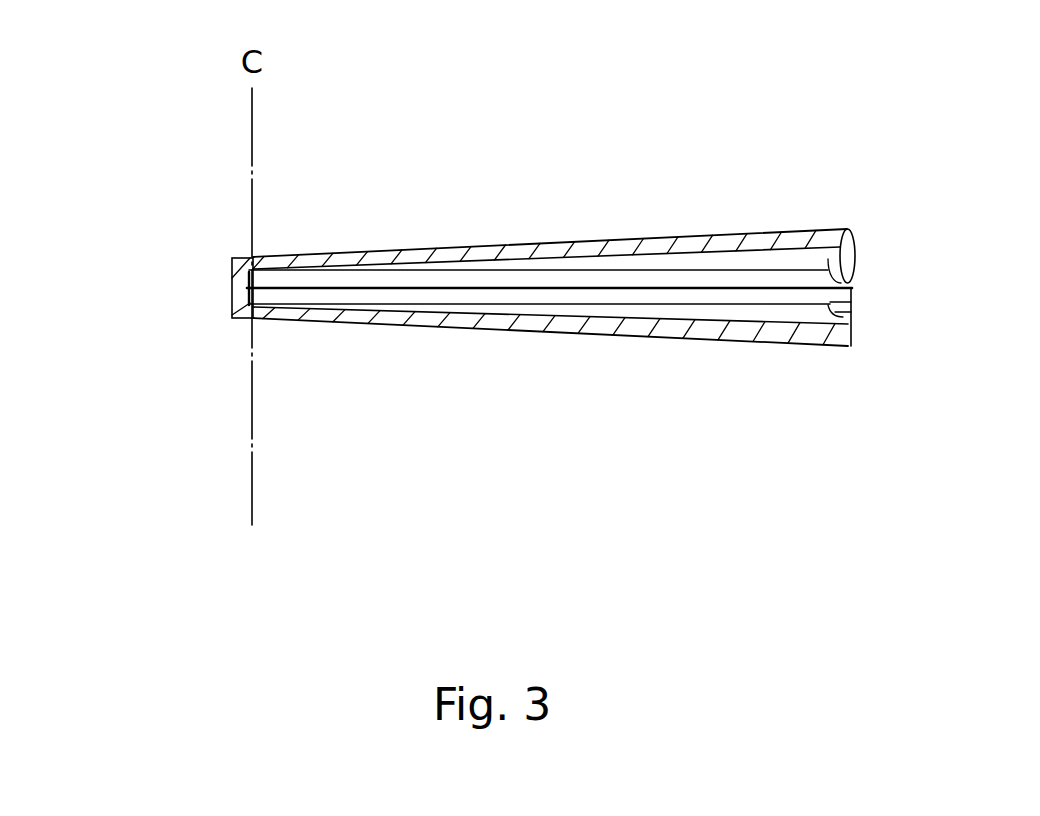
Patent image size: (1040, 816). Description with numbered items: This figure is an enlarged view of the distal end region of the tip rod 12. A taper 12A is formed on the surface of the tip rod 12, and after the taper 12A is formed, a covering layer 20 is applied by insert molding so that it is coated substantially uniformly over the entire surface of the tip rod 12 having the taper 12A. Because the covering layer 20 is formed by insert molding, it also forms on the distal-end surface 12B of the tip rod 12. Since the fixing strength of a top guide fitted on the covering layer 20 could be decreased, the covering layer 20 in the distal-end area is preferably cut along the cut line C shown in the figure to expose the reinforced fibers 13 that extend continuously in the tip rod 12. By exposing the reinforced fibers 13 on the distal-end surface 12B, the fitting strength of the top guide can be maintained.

The tip rod 12 is at (528, 243).
The taper 12A is at (662, 324).
The distal-end surface 12B is at (240, 291).
The reinforced fibers 13 is at (850, 310).
The covering layer 20 is at (573, 252).